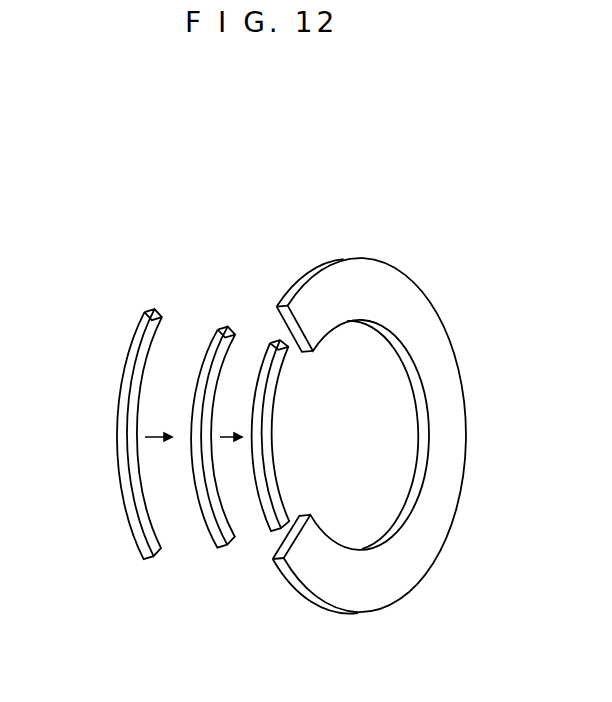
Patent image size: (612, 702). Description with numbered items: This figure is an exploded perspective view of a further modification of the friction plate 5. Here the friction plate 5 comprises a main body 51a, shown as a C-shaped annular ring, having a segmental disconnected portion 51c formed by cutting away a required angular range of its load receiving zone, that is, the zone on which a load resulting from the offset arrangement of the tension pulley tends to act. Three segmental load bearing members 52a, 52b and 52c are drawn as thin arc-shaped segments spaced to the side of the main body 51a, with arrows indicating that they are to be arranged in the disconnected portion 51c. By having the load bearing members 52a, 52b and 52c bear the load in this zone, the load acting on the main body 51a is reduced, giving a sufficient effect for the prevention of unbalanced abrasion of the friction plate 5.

The friction plate 5 is at (361, 160).
The main body 51a is at (328, 264).
The segmental disconnected portion 51c is at (303, 362).
The segmental load bearing member 52a is at (144, 312).
The segmental load bearing member 52b is at (218, 330).
The segmental load bearing member 52c is at (270, 343).